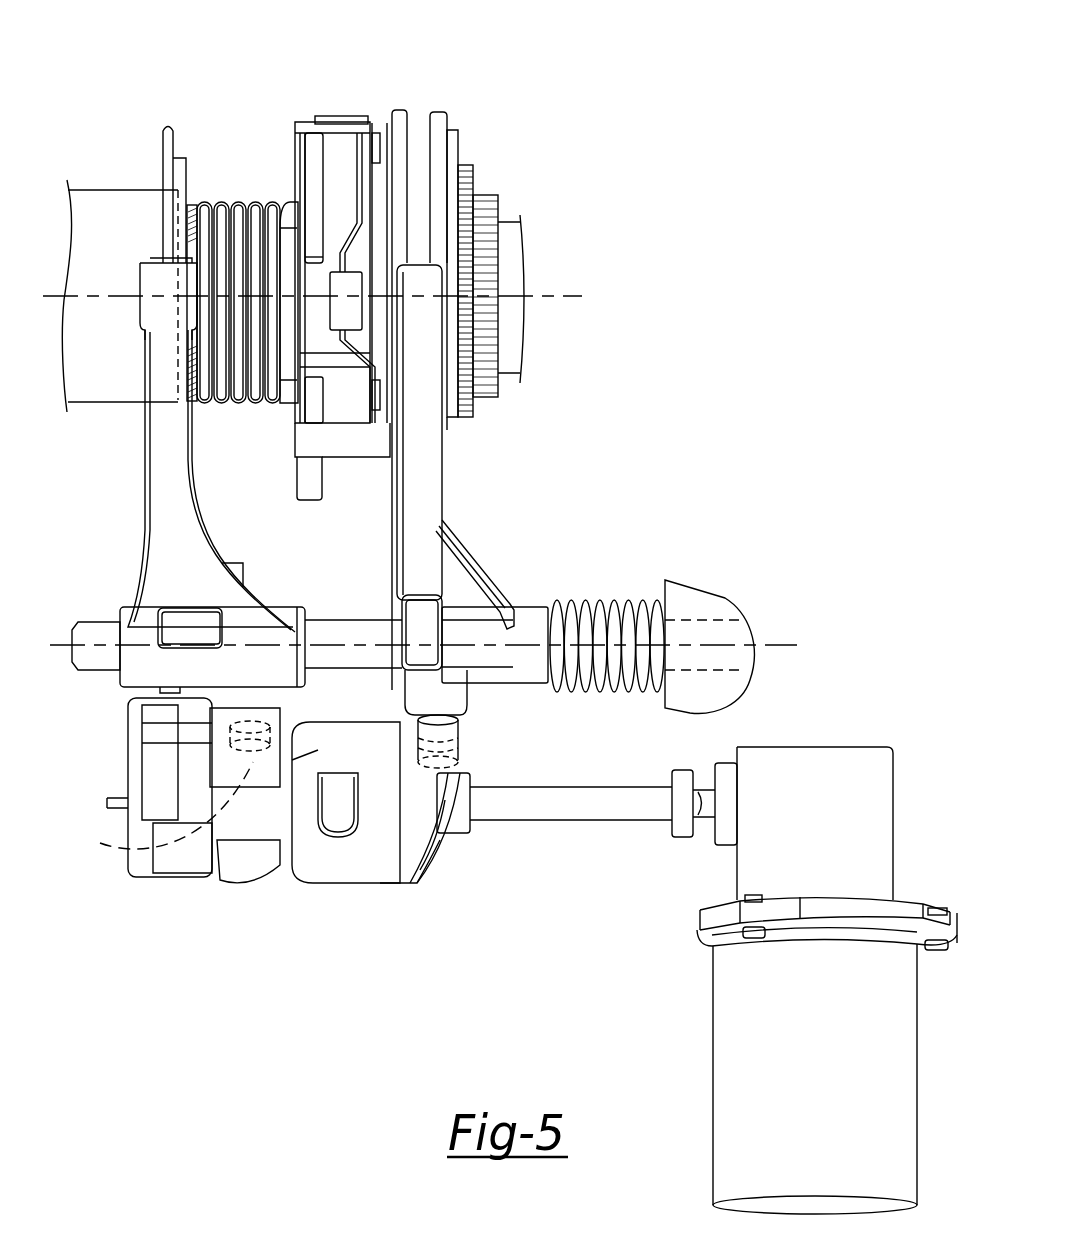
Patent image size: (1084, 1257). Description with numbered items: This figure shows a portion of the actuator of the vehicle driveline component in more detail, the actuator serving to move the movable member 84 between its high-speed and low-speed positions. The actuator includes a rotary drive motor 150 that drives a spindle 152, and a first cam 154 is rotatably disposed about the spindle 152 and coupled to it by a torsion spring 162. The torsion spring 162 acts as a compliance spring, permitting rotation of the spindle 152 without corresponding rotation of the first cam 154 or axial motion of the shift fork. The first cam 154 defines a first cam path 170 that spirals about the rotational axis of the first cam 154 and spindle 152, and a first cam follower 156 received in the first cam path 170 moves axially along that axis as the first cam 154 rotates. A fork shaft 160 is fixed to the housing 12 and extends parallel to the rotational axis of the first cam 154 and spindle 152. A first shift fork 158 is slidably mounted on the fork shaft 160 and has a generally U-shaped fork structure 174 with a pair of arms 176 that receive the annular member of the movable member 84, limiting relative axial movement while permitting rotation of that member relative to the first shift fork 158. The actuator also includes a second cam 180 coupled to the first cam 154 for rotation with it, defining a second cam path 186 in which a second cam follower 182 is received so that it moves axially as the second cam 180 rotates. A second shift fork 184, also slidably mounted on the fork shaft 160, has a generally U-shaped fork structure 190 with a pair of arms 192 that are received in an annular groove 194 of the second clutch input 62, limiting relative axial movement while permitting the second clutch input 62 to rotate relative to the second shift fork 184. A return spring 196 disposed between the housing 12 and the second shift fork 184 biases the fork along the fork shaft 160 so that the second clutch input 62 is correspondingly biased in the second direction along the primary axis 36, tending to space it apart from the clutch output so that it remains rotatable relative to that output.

The housing 12 is at (708, 598).
The primary axis 36 is at (567, 296).
The second clutch input 62 is at (510, 108).
The movable member 84 is at (90, 193).
The rotary drive motor 150 is at (727, 1045).
The spindle 152 is at (560, 813).
The first cam 154 is at (303, 862).
The first cam follower 156 is at (135, 840).
The first shift fork 158 is at (170, 585).
The fork shaft 160 is at (333, 628).
The torsion spring 162 is at (160, 762).
The first cam path 170 is at (260, 867).
The U-shaped fork structure 174 is at (160, 472).
The arms 176 is at (185, 385).
The second cam 180 is at (430, 870).
The second cam follower 182 is at (455, 740).
The second shift fork 184 is at (443, 575).
The second cam path 186 is at (430, 868).
The U-shaped fork structure 190 is at (430, 483).
The arms 192 is at (413, 383).
The annular groove 194 is at (418, 137).
The return spring 196 is at (617, 603).